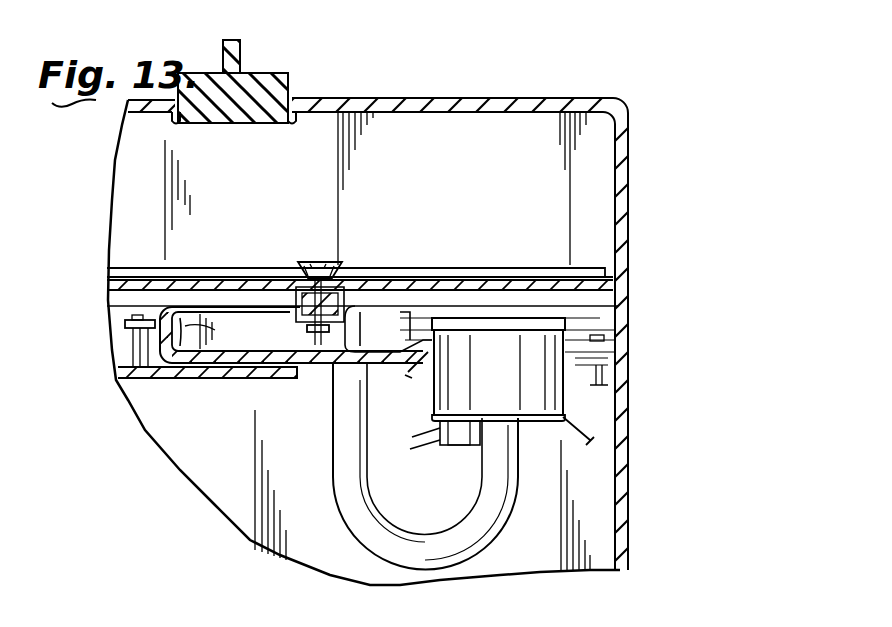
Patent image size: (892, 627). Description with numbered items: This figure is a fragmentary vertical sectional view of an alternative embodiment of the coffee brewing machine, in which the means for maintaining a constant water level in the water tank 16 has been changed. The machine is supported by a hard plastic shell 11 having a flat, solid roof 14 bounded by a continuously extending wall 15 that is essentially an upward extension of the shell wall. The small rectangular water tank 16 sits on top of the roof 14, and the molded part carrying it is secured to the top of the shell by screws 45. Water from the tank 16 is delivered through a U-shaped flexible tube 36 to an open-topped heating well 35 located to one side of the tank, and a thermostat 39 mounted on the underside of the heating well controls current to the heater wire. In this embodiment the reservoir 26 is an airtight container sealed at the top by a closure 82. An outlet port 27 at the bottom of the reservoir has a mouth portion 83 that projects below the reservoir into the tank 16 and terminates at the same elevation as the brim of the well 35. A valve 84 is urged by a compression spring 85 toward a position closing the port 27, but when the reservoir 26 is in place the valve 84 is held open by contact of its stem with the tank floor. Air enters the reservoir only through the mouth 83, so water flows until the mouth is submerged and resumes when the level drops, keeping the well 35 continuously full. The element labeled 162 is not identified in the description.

The shell 11 is at (628, 429).
The roof 14 is at (140, 378).
The wall 15 is at (620, 298).
The water tank 16 is at (243, 376).
The bracket 162 is at (182, 330).
The reservoir 26 is at (628, 139).
The outlet port 27 is at (340, 294).
The heating well 35 is at (532, 418).
The flexible tube 36 is at (488, 484).
The thermostat 39 is at (447, 450).
The screws 45 is at (140, 318).
The closure 82 is at (287, 84).
The mouth portion 83 is at (324, 317).
The valve 84 is at (330, 262).
The compression spring 85 is at (312, 329).